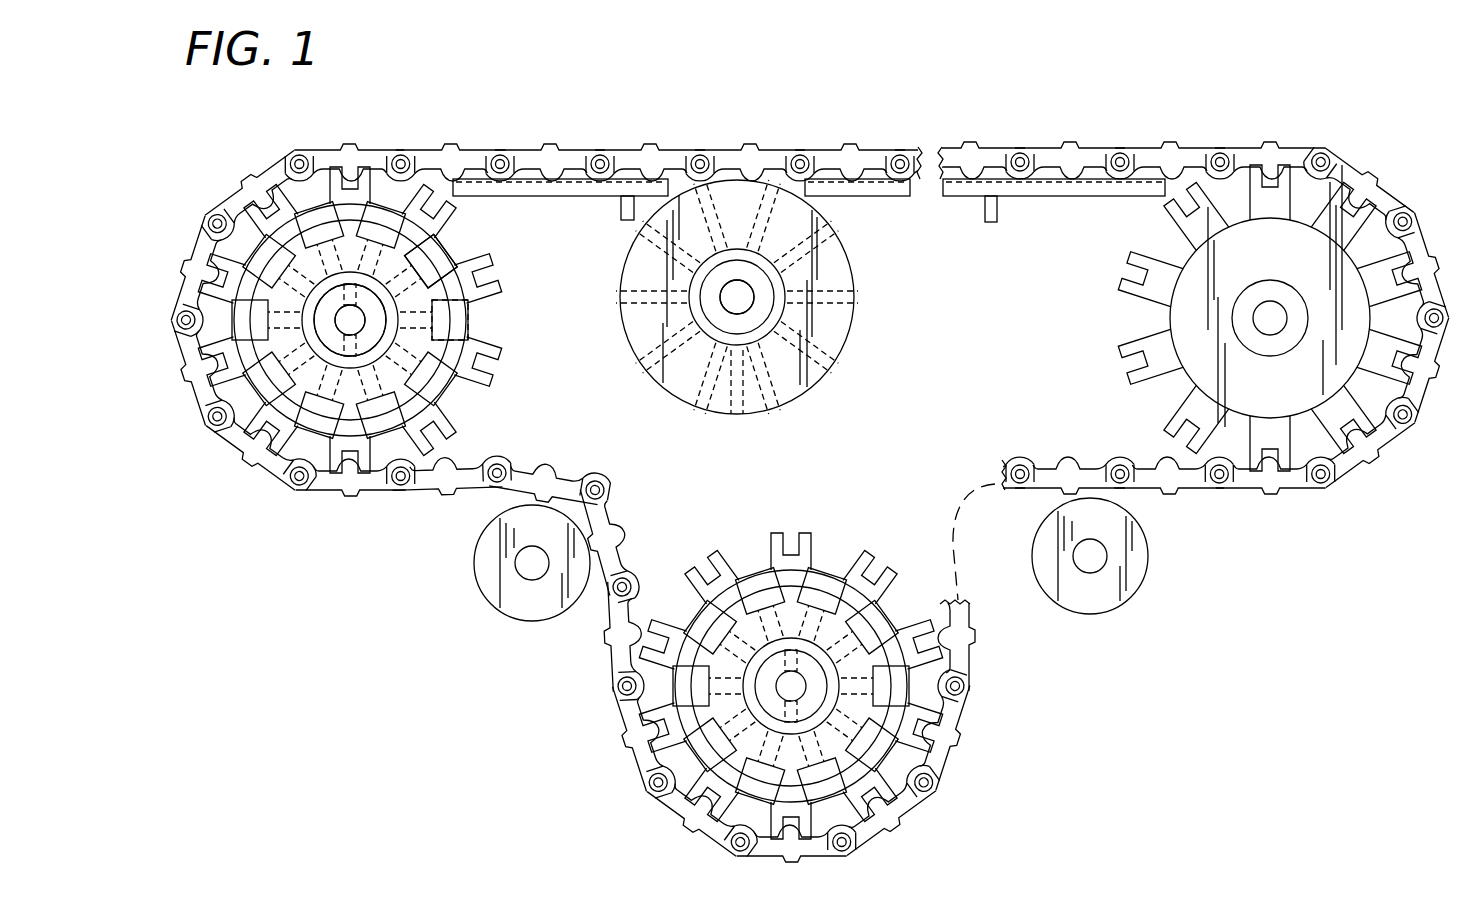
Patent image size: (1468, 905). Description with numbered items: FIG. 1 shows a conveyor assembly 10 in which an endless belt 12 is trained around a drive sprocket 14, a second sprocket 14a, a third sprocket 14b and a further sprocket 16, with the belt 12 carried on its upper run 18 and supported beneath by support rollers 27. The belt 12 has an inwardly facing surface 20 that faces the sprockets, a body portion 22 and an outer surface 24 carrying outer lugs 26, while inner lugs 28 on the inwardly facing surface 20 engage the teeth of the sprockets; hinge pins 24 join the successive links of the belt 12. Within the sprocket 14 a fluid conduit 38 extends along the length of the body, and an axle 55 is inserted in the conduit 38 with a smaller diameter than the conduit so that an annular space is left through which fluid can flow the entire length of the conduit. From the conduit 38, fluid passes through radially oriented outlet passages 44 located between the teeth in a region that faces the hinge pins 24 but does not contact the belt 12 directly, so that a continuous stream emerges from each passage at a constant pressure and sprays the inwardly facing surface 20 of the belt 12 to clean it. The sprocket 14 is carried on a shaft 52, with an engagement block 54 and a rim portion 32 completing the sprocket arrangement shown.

The track drive assembly 10 is at (841, 107).
The belt 12 is at (390, 150).
The sprocket 14 is at (497, 361).
The pulley wheel 14a is at (855, 345).
The second drive sprocket 14b is at (838, 560).
The idler sprocket 16 is at (1150, 322).
The upper run of track 18 is at (593, 150).
The inwardly facing surface 20 is at (570, 176).
The track body 22 is at (278, 480).
The hinge pins 24 is at (306, 497).
The traction lugs 26 is at (218, 448).
The support roller 27 is at (533, 610).
The drive lugs 28 is at (442, 476).
The pulley rim 32 is at (854, 280).
The fluid conduit 38 is at (430, 258).
The outlet passages 44 is at (777, 392).
The drive shaft 52 is at (337, 330).
The engagement block 54 is at (468, 323).
The axle 55 is at (372, 338).